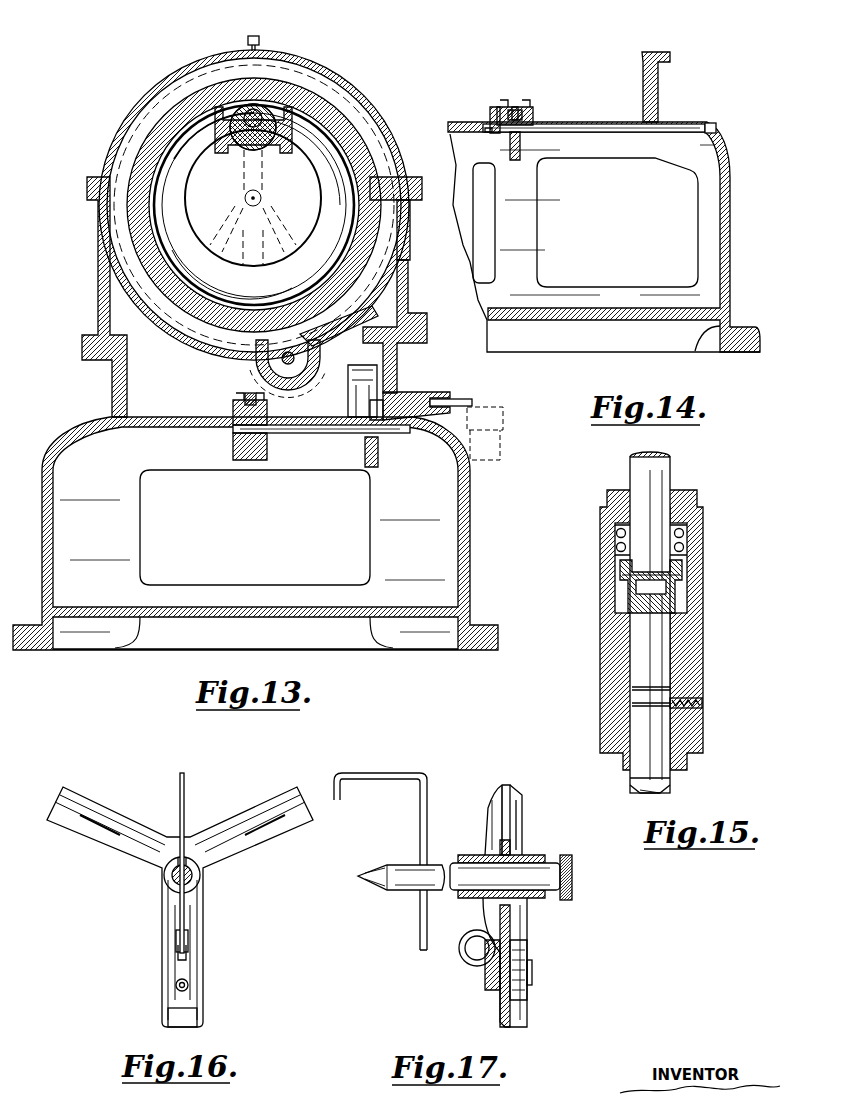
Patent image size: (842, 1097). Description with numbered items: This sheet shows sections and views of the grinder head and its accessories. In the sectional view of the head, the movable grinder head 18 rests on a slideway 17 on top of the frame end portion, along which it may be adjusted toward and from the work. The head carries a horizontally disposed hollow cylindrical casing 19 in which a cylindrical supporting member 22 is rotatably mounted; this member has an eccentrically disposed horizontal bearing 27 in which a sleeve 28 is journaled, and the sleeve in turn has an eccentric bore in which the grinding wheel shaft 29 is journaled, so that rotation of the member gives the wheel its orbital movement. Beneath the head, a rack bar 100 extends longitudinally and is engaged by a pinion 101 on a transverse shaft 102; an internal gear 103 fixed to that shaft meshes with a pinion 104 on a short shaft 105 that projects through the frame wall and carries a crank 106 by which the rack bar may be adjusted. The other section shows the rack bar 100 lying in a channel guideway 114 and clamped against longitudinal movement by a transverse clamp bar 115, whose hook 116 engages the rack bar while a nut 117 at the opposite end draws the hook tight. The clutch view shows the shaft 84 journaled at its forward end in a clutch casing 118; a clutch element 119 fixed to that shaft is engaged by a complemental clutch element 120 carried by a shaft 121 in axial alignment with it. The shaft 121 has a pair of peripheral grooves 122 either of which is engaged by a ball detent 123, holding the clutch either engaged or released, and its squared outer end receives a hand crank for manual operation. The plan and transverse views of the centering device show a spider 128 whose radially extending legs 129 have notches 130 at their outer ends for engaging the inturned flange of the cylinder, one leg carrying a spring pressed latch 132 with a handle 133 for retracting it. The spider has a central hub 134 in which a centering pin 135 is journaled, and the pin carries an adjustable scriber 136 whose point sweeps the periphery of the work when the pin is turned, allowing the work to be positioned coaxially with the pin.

In FIG. 13, the slideway 17 is at (128, 370).
In FIG. 14, the slideway 17 is at (668, 58).
In FIG. 13, the grinder head 18 is at (405, 300).
In FIG. 13, the cylindrical casing 19 is at (370, 150).
In FIG. 13, the cylindrical supporting member 22 is at (330, 290).
In FIG. 13, the eccentrically disposed horizontal bearing 27 is at (262, 160).
In FIG. 13, the sleeve 28 is at (272, 112).
In FIG. 13, the shaft 29 is at (254, 112).
In FIG. 15, the shaft 84 is at (680, 482).
In FIG. 13, the rack bar 100 is at (240, 406).
In FIG. 14, the rack bar 100 is at (514, 105).
In FIG. 13, the pinion 101 is at (245, 460).
In FIG. 13, the transverse shaft 102 is at (300, 440).
In FIG. 13, the internal gear 103 is at (372, 465).
In FIG. 13, the pinion 104 is at (415, 396).
In FIG. 13, the short shaft 105 is at (462, 405).
In FIG. 13, the crank 106 is at (503, 450).
In FIG. 14, the channel guideway 114 is at (528, 112).
In FIG. 14, the clamp bar 115 is at (560, 126).
In FIG. 14, the hook 116 is at (493, 124).
In FIG. 14, the nut 117 is at (712, 122).
In FIG. 15, the clutch casing 118 is at (690, 663).
In FIG. 15, the clutch element 119 is at (692, 560).
In FIG. 15, the complemental clutch element 120 is at (690, 596).
In FIG. 15, the shaft 121 is at (672, 784).
In FIG. 15, the peripheral grooves 122 is at (632, 690).
In FIG. 15, the ball detent 123 is at (702, 700).
In FIG. 16, the spider 128 is at (188, 835).
In FIG. 17, the spider 128 is at (530, 905).
In FIG. 16, the legs 129 is at (238, 856).
In FIG. 17, the legs 129 is at (520, 830).
In FIG. 17, the notches 130 is at (508, 790).
In FIG. 17, the spring pressed latch 132 is at (525, 998).
In FIG. 17, the handle 133 is at (470, 962).
In FIG. 16, the central hub 134 is at (210, 890).
In FIG. 17, the central hub 134 is at (525, 858).
In FIG. 16, the centering pin 135 is at (160, 830).
In FIG. 17, the centering pin 135 is at (430, 862).
In FIG. 16, the adjustable scriber 136 is at (185, 800).
In FIG. 17, the adjustable scriber 136 is at (387, 773).